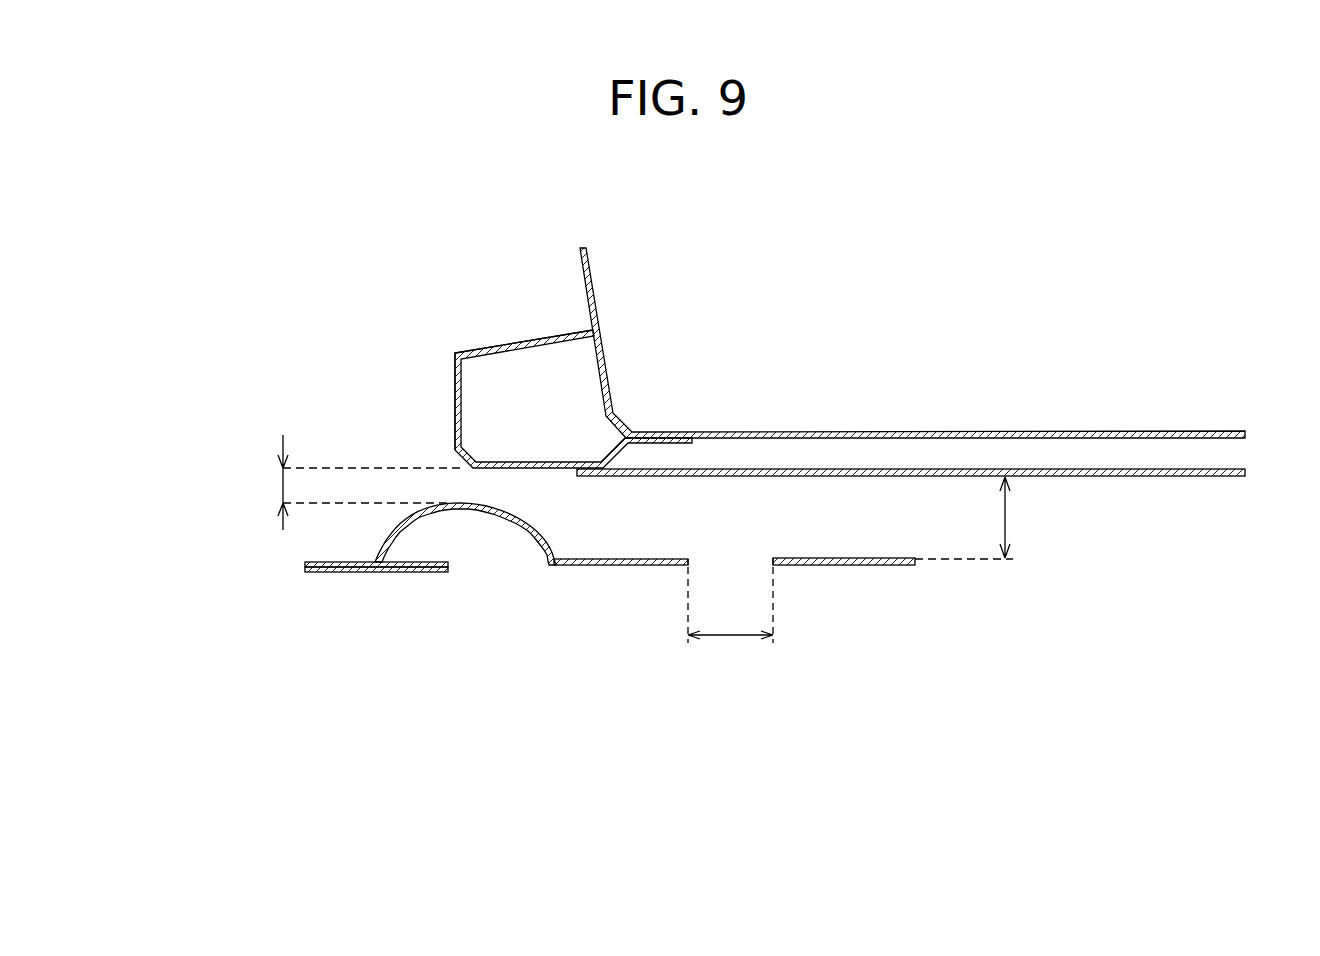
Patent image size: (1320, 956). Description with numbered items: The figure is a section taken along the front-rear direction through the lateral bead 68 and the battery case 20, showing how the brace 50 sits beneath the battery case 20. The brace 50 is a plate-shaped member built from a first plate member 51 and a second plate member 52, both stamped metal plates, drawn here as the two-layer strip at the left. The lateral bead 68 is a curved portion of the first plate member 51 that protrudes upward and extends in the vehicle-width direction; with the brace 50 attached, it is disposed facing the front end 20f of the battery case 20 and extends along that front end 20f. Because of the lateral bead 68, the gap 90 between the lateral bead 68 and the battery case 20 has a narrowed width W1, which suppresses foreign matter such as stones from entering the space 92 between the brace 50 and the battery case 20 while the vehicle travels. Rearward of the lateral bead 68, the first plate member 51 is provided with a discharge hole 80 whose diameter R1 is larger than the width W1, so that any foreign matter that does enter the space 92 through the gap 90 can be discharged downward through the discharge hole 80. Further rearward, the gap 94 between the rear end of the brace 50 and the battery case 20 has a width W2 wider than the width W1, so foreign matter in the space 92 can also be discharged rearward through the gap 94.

The battery case 20 is at (1183, 478).
The front end of the battery case 20f is at (468, 453).
The gap 90 is at (470, 488).
The brace 50 is at (207, 531).
The first plate member 51 is at (332, 562).
The second plate member 52 is at (330, 568).
The lateral bead 68 is at (465, 510).
The space 92 is at (663, 512).
The gap 94 is at (895, 512).
The discharge hole 80 is at (727, 562).
The diameter of the discharge holes R1 is at (730, 620).
The width of the gap W1 is at (348, 482).
The width of the gap W2 is at (985, 518).